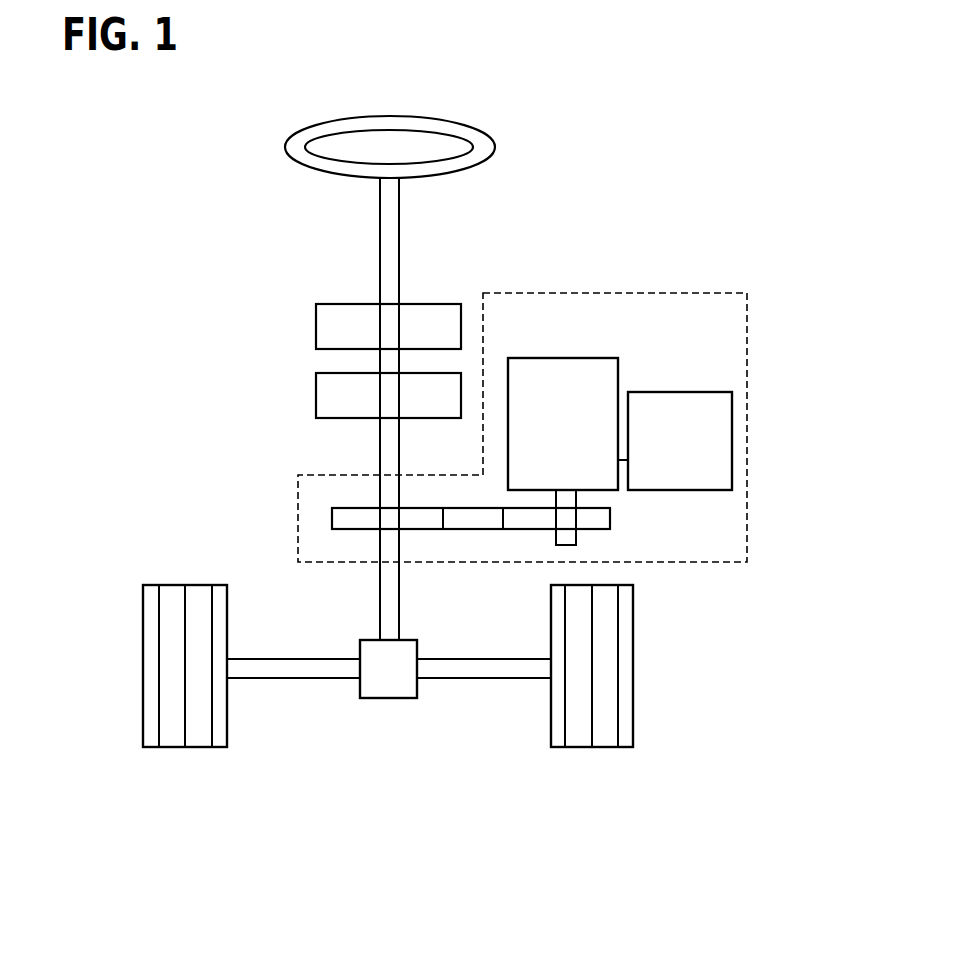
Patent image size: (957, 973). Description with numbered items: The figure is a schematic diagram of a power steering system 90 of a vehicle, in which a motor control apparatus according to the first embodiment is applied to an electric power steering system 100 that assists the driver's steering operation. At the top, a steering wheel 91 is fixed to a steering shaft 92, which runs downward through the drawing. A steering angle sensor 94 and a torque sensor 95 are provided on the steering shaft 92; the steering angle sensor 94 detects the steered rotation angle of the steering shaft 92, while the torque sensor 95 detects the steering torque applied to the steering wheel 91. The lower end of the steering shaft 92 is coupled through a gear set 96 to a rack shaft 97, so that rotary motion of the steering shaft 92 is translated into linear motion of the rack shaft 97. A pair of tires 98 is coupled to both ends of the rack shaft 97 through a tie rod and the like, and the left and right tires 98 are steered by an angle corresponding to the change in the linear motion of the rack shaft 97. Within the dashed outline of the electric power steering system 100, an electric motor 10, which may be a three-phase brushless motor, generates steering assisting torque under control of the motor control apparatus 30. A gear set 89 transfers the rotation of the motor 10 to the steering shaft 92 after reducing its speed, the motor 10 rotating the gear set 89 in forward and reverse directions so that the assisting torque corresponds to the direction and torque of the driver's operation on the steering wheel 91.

The power steering system 90 is at (352, 826).
The steering wheel 91 is at (283, 150).
The steering shaft 92 is at (380, 233).
The steering angle sensor 94 is at (316, 331).
The torque sensor 95 is at (316, 403).
The gear set 96 is at (380, 699).
The rack shaft 97 is at (287, 679).
The tires 98 is at (200, 748).
The gear set 89 is at (611, 518).
The electric motor 10 is at (619, 368).
The motor control apparatus 30 is at (733, 398).
The electric power steering system 100 is at (748, 313).